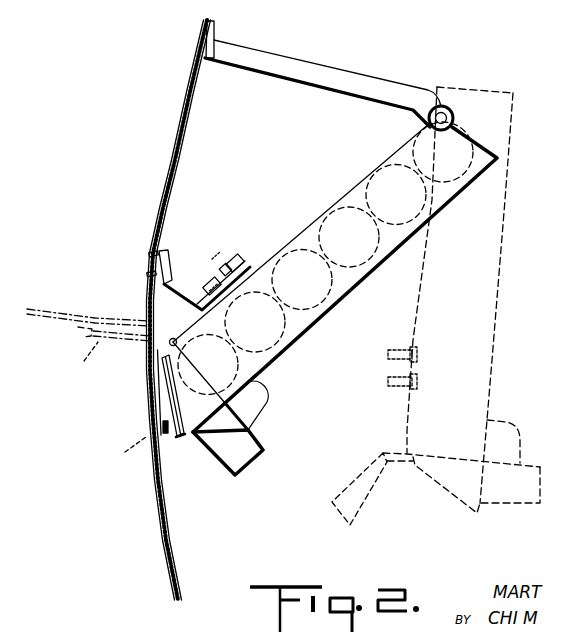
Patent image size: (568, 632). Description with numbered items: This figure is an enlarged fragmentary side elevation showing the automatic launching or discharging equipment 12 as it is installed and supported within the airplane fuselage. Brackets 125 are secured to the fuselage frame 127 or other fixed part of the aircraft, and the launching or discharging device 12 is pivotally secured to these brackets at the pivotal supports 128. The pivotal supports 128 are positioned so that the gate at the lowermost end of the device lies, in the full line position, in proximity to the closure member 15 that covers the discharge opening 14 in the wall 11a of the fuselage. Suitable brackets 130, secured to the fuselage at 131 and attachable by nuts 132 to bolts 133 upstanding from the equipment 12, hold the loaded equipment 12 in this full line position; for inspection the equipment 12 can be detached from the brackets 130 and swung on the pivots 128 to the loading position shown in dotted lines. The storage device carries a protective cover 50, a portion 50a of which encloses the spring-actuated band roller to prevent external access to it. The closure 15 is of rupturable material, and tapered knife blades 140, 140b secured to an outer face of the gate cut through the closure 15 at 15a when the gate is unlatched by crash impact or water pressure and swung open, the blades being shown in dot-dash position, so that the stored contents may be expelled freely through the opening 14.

The fuselage wall 11a is at (163, 535).
The fuselage frame 127 is at (214, 37).
The brackets 125 is at (265, 55).
The pivotal supports 128 is at (447, 113).
The launching or discharging equipment 12 is at (302, 218).
The brackets 130 is at (178, 293).
The bracket fastening point 131 is at (153, 258).
The nuts 132 is at (243, 260).
The bolts 133 is at (216, 264).
The knife blade 140 is at (80, 328).
The knife blade 140b is at (107, 404).
The cutting location on closure 15a is at (44, 308).
The closure member 15 is at (145, 398).
The discharge opening 14 is at (158, 418).
The protective cover 50 is at (245, 468).
The portion of protective cover 50a is at (268, 406).